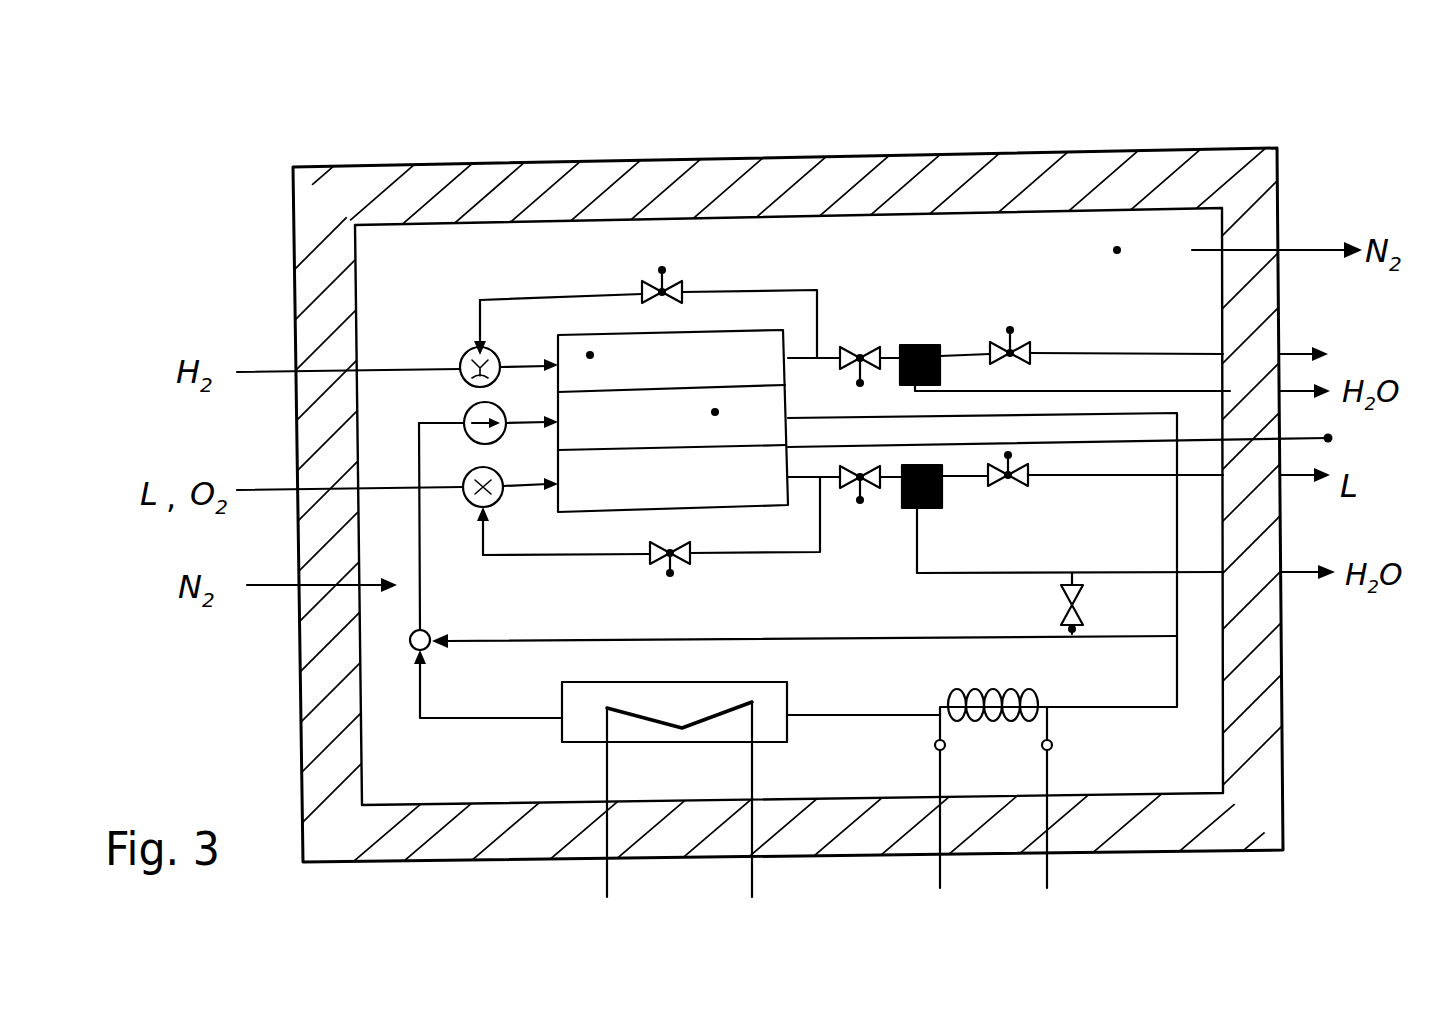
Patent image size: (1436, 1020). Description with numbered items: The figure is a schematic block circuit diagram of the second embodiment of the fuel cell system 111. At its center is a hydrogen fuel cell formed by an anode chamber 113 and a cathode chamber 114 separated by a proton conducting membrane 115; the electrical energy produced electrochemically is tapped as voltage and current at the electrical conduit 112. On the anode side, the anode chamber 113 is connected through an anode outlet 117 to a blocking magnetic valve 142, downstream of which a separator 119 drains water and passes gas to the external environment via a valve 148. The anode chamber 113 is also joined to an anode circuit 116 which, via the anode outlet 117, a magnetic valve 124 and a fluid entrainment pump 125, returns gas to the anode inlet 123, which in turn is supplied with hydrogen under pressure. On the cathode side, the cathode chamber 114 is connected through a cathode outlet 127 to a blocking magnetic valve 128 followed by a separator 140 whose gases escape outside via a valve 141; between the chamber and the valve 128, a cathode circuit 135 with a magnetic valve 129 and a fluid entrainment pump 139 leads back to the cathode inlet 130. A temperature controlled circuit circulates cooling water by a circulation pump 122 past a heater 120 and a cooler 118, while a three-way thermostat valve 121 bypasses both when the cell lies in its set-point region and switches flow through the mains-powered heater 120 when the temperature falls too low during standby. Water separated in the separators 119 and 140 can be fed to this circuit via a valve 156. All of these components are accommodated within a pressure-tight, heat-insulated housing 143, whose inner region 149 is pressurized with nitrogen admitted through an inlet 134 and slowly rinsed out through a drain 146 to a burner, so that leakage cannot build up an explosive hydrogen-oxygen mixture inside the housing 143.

The fuel cell system 111 is at (222, 122).
The electrical conduit 112 is at (1098, 438).
The anode chamber 113 is at (637, 467).
The cathode chamber 114 is at (590, 355).
The proton conducting membrane 115 is at (715, 412).
The anode circuit 116 is at (745, 292).
The anode outlet 117 is at (825, 357).
The cooler 118 is at (607, 872).
The separator 119 is at (927, 345).
The heater 120 is at (940, 873).
The three-way thermostat valve 121 is at (430, 650).
The circulation pump 122 is at (463, 412).
The anode inlet 123 is at (272, 368).
The magnetic valve 124 is at (668, 268).
The fluid entrainment pump 125 is at (462, 350).
The cathode outlet 127 is at (828, 477).
The magnetic valve 128 is at (873, 480).
The magnetic valve 129 is at (676, 578).
The cathode inlet 130 is at (273, 488).
The inlet 134 is at (265, 585).
The cathode circuit 135 is at (560, 557).
The fluid entrainment pump 139 is at (467, 503).
The separator 140 is at (942, 497).
The valve 141 is at (1027, 482).
The magnetic valve 142 is at (865, 382).
The housing 143 is at (1283, 728).
The drain 146 is at (1295, 248).
The valve 148 is at (1035, 350).
The inner region 149 is at (1117, 250).
The valve 156 is at (1083, 595).